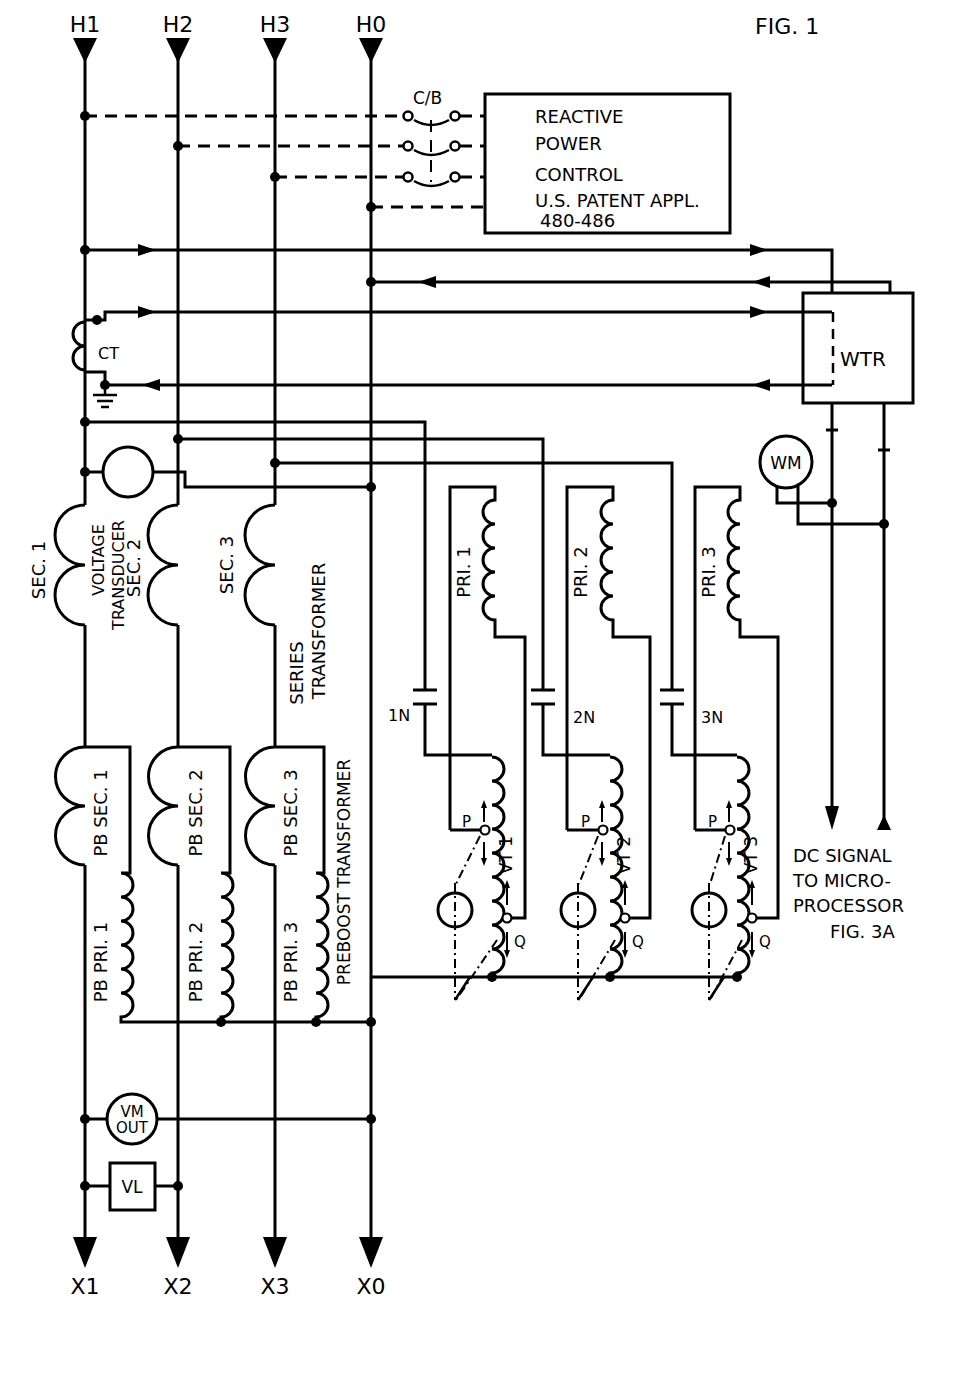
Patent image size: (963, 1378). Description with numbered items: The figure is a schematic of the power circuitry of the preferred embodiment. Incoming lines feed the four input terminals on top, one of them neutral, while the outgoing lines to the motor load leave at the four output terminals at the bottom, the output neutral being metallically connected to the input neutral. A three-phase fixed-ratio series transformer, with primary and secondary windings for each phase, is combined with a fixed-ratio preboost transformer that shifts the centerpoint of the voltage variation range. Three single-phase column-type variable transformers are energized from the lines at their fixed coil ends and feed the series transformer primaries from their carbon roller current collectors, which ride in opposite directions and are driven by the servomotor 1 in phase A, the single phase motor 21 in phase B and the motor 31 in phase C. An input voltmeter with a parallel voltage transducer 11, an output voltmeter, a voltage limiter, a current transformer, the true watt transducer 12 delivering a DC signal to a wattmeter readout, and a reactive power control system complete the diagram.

The servomotor 1 is at (448, 921).
The single phase motor 21 is at (571, 921).
The motor 31 is at (702, 921).
The voltage transducer 11 is at (108, 456).
The watt transducer (WTR) 12 is at (891, 305).